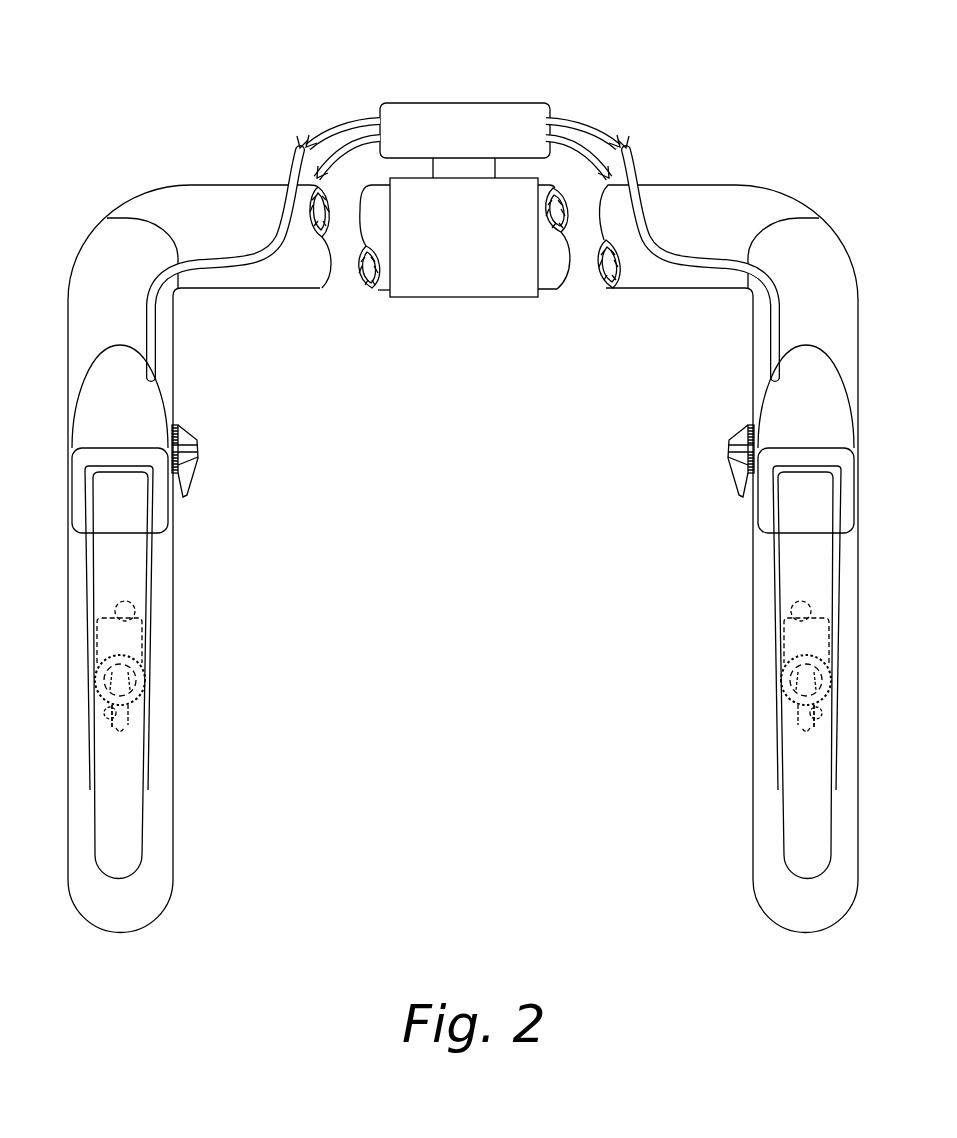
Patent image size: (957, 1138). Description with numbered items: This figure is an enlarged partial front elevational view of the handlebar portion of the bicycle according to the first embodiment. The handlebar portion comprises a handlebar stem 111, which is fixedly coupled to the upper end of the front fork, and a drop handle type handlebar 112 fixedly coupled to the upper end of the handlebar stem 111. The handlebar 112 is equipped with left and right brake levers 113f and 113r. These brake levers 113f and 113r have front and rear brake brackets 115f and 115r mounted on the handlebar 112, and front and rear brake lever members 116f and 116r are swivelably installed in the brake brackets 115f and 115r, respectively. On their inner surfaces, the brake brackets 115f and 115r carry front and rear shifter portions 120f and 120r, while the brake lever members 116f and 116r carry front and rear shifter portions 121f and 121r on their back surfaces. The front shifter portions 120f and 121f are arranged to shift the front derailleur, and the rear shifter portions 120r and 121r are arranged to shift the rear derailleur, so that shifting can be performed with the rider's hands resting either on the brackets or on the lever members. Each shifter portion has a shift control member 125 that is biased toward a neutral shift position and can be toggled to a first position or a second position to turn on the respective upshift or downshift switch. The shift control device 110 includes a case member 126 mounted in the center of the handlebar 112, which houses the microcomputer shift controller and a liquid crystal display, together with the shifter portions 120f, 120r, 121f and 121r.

The shift control device 110 is at (467, 196).
The handlebar stem 111 is at (493, 283).
The handlebar 112 is at (748, 207).
The front brake lever 113f is at (181, 393).
The rear brake lever 113r is at (734, 403).
The front brake bracket 115f is at (142, 397).
The rear brake bracket 115r is at (775, 412).
The front brake lever member 116f is at (128, 572).
The rear brake lever member 116r is at (793, 567).
The front shifter portion 120f is at (716, 455).
The rear shifter portion 120r is at (208, 457).
The front shifter portion 121f is at (775, 665).
The rear shifter portion 121r is at (152, 662).
The shift control member 125 is at (187, 483).
The case member 126 is at (424, 104).